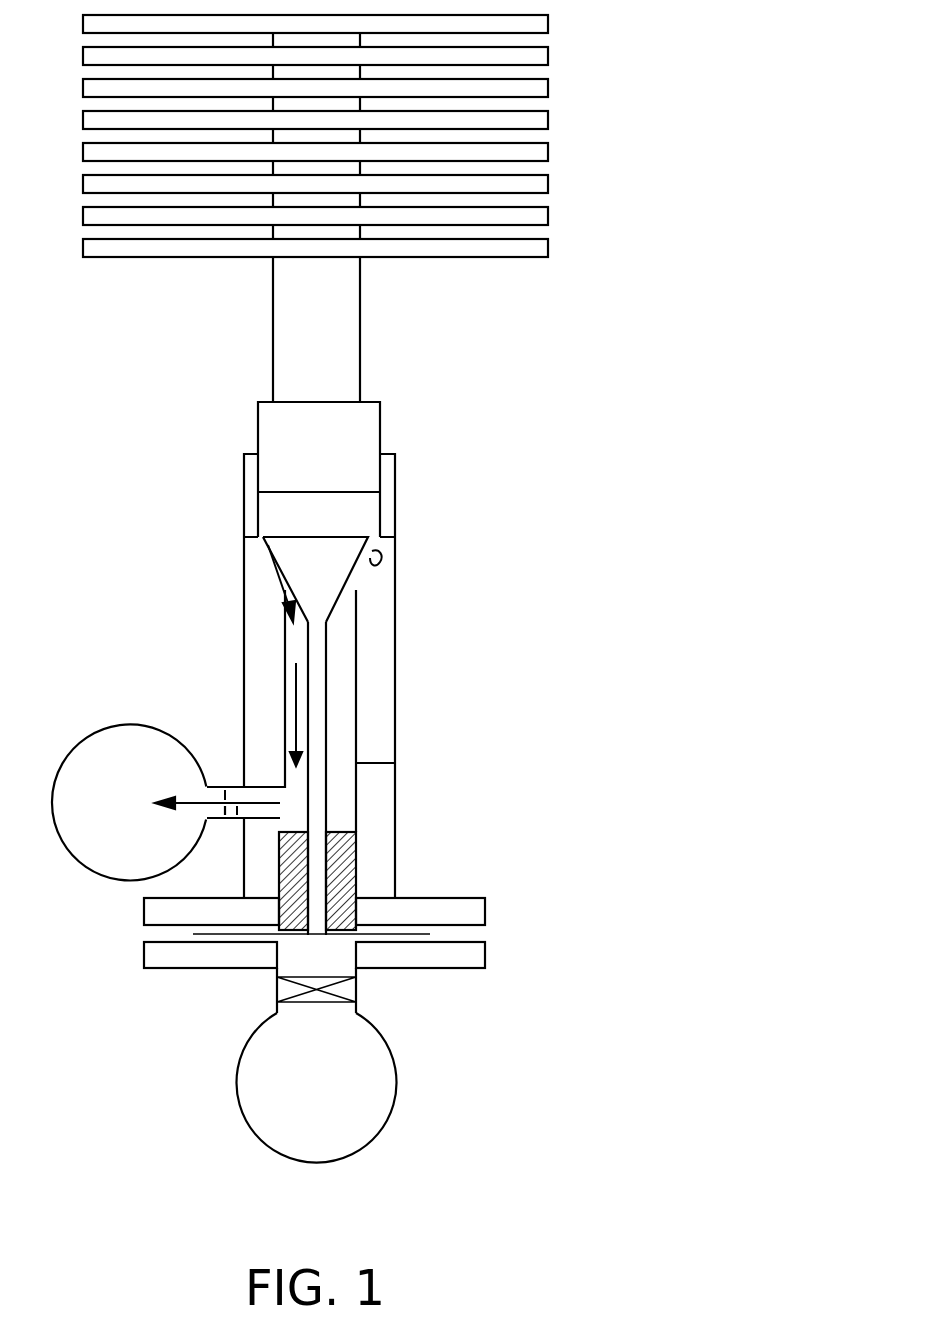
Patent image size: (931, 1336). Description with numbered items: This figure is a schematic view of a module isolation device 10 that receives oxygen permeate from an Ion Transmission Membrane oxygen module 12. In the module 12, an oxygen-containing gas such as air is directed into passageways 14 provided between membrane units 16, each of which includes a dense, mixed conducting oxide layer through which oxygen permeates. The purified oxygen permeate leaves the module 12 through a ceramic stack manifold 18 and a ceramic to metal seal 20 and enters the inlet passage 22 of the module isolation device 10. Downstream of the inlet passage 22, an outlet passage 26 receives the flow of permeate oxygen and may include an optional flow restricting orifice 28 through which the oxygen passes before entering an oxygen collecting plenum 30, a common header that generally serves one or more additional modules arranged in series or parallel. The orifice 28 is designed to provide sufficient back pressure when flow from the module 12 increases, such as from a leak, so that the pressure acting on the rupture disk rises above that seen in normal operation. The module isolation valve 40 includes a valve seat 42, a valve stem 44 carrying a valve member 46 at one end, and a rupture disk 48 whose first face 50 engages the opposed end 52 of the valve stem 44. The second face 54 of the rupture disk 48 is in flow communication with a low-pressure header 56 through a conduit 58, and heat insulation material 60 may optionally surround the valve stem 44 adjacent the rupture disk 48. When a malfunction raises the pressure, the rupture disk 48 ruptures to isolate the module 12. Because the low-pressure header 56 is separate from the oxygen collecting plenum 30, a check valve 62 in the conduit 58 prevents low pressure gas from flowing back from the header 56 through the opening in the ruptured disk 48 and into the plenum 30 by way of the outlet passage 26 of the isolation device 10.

The module isolation device 10 is at (635, 528).
The ITM oxygen module 12 is at (770, 140).
The passageways 14 is at (535, 135).
The membrane units 16 is at (540, 24).
The ceramic stack manifold 18 is at (360, 325).
The ceramic to metal seal 20 is at (350, 437).
The inlet passage 22 is at (330, 492).
The outlet passage 26 is at (232, 818).
The flow restricting orifice 28 is at (226, 790).
The oxygen collecting plenum 30 is at (122, 745).
The module isolation valve 40 is at (350, 628).
The valve seat 42 is at (378, 560).
The valve stem 44 is at (318, 700).
The valve member 46 is at (292, 545).
The rupture disk 48 is at (417, 940).
The first face 50 is at (185, 928).
The opposed end 52 is at (322, 940).
The second face 54 is at (218, 935).
The low-pressure header 56 is at (340, 1110).
The conduit 58 is at (270, 1012).
The heat insulation material 60 is at (350, 855).
The check valve 62 is at (322, 1005).